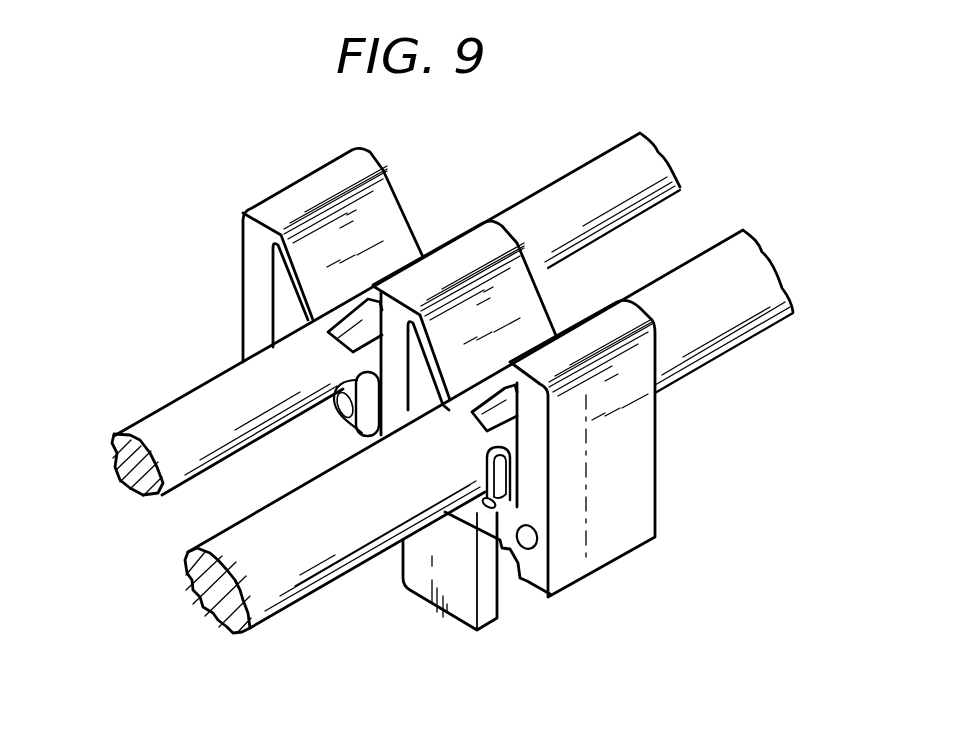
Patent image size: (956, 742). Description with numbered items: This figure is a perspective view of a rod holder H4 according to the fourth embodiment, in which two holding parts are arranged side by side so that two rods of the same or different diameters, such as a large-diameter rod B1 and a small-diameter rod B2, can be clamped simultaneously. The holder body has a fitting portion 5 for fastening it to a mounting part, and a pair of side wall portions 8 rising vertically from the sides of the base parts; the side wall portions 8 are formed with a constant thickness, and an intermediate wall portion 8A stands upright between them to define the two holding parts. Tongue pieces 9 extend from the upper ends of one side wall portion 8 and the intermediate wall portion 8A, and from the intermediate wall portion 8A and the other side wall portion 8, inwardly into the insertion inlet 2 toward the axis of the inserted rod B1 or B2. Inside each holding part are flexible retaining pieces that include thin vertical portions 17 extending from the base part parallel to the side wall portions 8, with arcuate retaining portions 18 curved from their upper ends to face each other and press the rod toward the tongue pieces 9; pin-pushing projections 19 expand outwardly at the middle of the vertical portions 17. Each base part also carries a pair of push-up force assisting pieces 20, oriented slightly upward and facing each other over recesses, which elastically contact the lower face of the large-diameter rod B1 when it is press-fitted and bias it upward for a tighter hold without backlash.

The rod holder H4 is at (420, 391).
The large-diameter rod B1 is at (763, 283).
The small-diameter rod B2 is at (610, 183).
The insertion inlet 2 is at (320, 277).
The fitting portion 5 is at (463, 610).
The side wall portions 8 is at (257, 280).
The intermediate wall portion 8A is at (393, 340).
The tongue pieces 9 is at (373, 240).
The vertical portions 17 is at (387, 400).
The arcuate retaining portions 18 is at (353, 422).
The pin-pushing projections 19 is at (503, 477).
The push-up force assisting pieces 20 is at (354, 425).